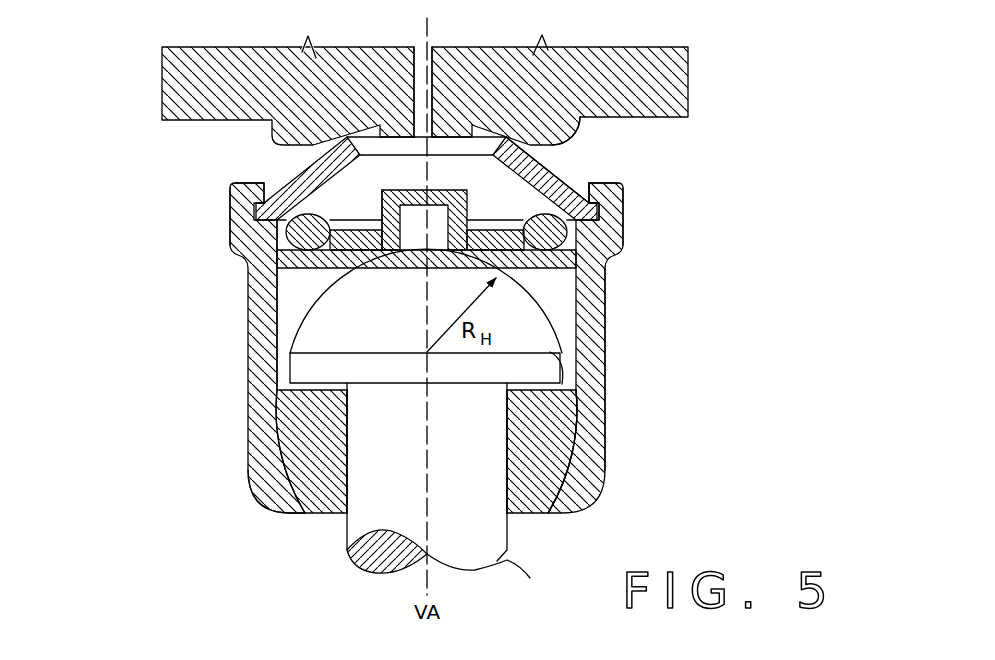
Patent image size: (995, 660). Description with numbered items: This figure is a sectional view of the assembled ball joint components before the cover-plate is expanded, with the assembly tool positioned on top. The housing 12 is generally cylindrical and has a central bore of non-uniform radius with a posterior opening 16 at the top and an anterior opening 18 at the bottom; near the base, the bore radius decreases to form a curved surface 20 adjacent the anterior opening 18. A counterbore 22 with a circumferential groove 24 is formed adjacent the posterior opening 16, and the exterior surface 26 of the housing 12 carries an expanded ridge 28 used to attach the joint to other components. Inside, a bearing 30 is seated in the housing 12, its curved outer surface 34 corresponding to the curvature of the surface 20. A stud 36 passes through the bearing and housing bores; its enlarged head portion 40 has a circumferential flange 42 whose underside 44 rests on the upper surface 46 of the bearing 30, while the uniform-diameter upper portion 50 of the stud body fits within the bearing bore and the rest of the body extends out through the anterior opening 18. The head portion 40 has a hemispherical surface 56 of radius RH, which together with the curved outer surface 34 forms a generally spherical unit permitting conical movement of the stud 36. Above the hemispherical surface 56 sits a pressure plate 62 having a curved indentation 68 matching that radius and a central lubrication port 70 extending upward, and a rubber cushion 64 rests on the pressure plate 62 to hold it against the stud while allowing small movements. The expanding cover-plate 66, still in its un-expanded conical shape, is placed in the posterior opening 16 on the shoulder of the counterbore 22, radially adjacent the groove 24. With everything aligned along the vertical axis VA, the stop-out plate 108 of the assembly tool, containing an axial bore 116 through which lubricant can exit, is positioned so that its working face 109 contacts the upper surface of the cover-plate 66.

The stop-out plate 108 is at (158, 88).
The working face 109 is at (549, 134).
The axial bore 116 is at (430, 68).
The counterbore 22 is at (260, 202).
The posterior opening 16 is at (579, 174).
The lubrication port 70 is at (369, 211).
The curved indentation 68 is at (402, 246).
The expanding cover-plate 66 is at (585, 200).
The circumferential groove 24 is at (245, 226).
The expanded ridge 28 is at (628, 217).
The housing 12 is at (236, 263).
The rubber cushion 64 is at (607, 245).
The pressure plate 62 is at (605, 267).
The hemispherical surface 56 is at (301, 311).
The head portion 40 is at (516, 324).
The exterior surface 26 is at (608, 336).
The circumferential flange 42 is at (311, 372).
The underside of flange 44 is at (536, 380).
The bearing 30 is at (552, 421).
The upper surface of bearing 46 is at (308, 394).
The curved surface 20 is at (569, 460).
The anterior opening 18 is at (301, 527).
The curved outer surface 34 is at (514, 484).
The stud 36 is at (341, 532).
The upper portion 50 is at (470, 516).